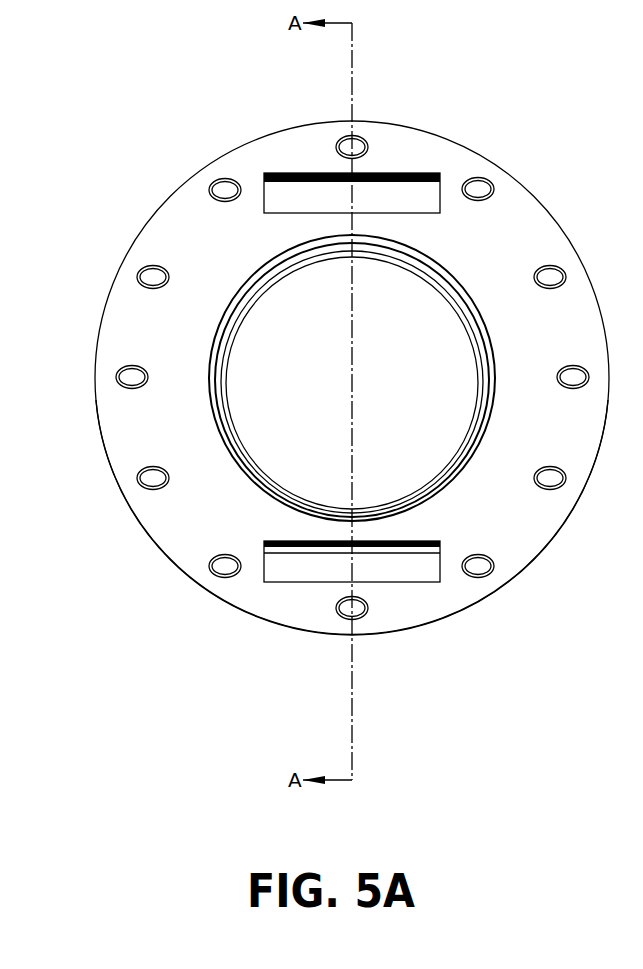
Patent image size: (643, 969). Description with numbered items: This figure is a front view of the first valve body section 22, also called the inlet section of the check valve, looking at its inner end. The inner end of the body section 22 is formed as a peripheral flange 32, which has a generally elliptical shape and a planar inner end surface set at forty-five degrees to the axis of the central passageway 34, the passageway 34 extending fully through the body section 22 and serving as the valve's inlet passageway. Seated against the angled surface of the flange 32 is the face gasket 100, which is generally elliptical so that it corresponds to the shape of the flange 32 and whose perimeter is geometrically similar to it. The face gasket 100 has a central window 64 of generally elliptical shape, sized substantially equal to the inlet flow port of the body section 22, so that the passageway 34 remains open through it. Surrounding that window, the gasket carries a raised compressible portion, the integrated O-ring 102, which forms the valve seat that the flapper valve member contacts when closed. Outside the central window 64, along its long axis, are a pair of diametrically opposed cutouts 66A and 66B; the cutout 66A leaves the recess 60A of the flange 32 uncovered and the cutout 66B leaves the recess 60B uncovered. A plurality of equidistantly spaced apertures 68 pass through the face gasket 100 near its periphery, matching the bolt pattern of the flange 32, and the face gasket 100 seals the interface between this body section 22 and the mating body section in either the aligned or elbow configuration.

The first valve body section 22 is at (158, 93).
The peripheral flange 32 is at (308, 650).
The central passageway 34 is at (299, 401).
The recess 60A is at (272, 179).
The recess 60B is at (395, 556).
The central window 64 is at (253, 463).
The cutout 66A is at (428, 173).
The cutout 66B is at (262, 572).
The apertures 68 is at (210, 189).
The face gasket 100 is at (465, 598).
The O-ring 102 is at (460, 280).